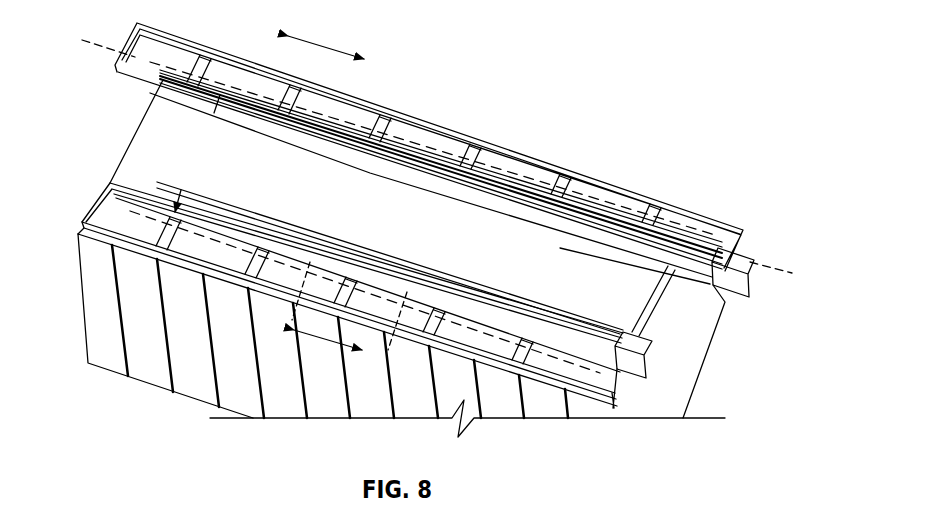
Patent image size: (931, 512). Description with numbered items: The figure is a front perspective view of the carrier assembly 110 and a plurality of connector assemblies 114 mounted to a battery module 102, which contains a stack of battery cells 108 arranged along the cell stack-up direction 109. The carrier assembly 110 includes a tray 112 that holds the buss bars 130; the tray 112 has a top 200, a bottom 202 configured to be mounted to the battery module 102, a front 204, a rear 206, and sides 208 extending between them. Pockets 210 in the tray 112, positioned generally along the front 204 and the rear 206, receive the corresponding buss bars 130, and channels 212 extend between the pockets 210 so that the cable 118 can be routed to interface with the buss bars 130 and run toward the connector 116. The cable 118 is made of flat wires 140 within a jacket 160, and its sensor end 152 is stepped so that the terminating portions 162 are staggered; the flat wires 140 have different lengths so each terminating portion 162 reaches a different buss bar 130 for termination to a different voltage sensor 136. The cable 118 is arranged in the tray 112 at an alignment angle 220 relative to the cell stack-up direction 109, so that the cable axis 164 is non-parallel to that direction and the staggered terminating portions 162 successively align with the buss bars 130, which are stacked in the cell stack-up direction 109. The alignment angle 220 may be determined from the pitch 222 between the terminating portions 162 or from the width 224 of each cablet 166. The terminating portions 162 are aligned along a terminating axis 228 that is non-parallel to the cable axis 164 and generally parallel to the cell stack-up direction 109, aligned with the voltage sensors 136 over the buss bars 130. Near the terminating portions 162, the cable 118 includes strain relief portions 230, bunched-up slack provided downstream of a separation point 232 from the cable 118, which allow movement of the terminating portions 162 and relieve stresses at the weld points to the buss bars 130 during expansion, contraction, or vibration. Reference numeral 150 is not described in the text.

The battery module 102 is at (532, 70).
The battery cells 108 is at (118, 358).
The cell stack-up direction 109 is at (334, 50).
The carrier assembly 110 is at (153, 136).
The tray 112 is at (165, 232).
The connector assemblies 114 is at (657, 368).
The connector 116 is at (647, 346).
The cable 118 is at (476, 202).
The buss bars 130 is at (598, 190).
The voltage sensors 136 is at (645, 215).
The flat wires 140 is at (623, 217).
The rail end 150 is at (720, 245).
The sensor end 152 is at (270, 95).
The jacket 160 is at (644, 238).
The terminating portions 162 is at (491, 334).
The cable axis 164 is at (150, 204).
The cablets 166 is at (512, 342).
The top 200 is at (195, 250).
The bottom 202 is at (207, 260).
The front 204 is at (225, 270).
The rear 206 is at (415, 118).
The sides 208 is at (107, 184).
The pockets 210 is at (99, 205).
The channels 212 is at (152, 214).
The alignment angle 220 is at (163, 82).
The pitch 222 is at (292, 338).
The width 224 is at (378, 338).
The terminating axis 228 is at (98, 48).
The strain relief portions 230 is at (224, 266).
The separation point 232 is at (249, 252).